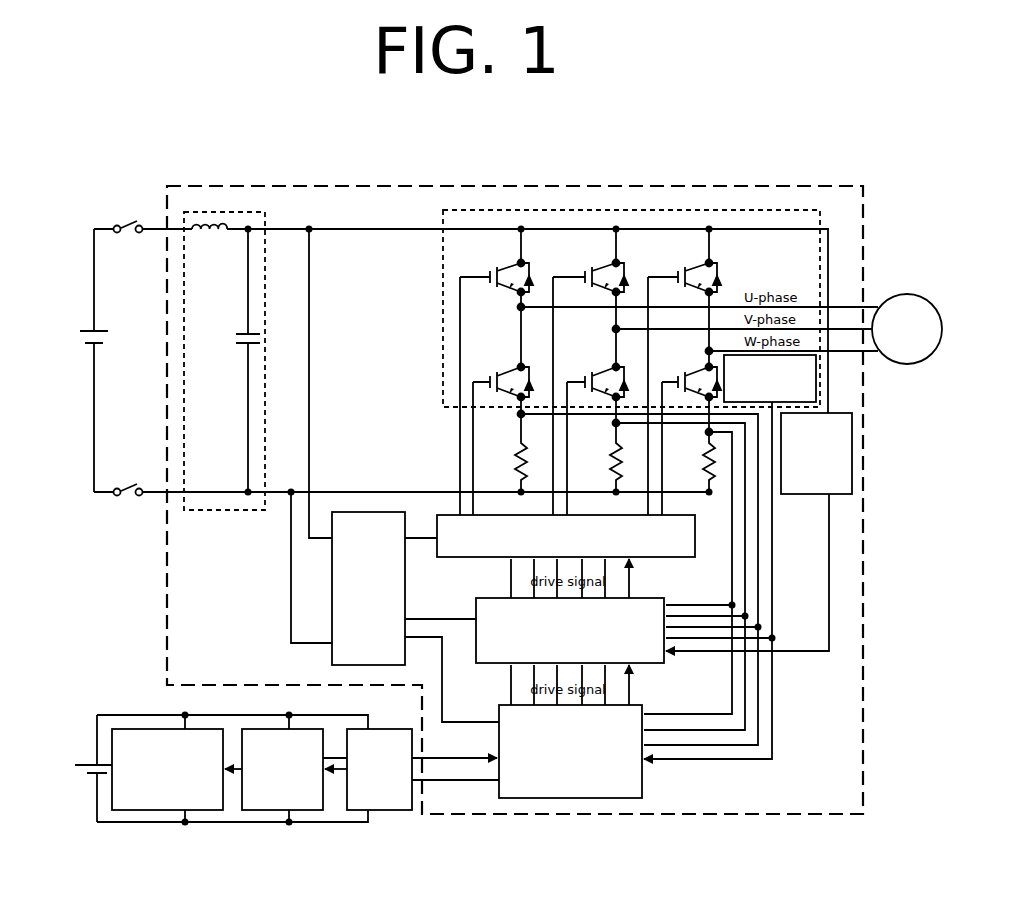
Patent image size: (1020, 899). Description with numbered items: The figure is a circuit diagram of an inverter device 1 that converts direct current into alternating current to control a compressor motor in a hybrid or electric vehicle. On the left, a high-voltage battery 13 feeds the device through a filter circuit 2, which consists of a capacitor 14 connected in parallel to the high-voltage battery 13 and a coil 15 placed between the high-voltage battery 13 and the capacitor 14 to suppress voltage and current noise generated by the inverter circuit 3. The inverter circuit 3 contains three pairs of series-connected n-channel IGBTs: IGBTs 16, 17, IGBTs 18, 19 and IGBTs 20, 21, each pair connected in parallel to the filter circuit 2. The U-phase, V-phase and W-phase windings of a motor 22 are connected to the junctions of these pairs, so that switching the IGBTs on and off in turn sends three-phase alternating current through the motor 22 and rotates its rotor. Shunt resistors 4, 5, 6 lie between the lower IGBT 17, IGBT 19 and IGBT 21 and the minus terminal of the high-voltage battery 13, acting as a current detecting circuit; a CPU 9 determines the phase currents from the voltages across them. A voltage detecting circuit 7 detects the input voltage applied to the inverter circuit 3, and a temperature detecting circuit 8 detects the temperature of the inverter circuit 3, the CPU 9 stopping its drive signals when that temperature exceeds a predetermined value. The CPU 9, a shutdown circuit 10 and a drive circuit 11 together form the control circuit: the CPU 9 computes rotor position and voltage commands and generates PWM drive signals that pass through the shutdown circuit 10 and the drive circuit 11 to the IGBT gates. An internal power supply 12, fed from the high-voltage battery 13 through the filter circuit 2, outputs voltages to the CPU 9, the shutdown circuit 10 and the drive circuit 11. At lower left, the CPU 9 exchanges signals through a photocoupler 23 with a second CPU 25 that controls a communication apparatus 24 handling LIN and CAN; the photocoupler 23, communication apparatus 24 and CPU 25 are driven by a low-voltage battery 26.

The inverter device 1 is at (470, 185).
The filter circuit 2 is at (240, 212).
The inverter circuit 3 is at (655, 210).
The shunt resistor 4 is at (516, 465).
The shunt resistor 5 is at (610, 465).
The shunt resistor 6 is at (703, 465).
The voltage detecting circuit 7 is at (852, 456).
The temperature detecting circuit 8 is at (816, 382).
The CPU 9 is at (642, 793).
The shutdown circuit 10 is at (490, 665).
The drive circuit 11 is at (466, 560).
The internal power supply 12 is at (332, 595).
The high-voltage battery 13 is at (80, 327).
The capacitor 14 is at (246, 333).
The coil 15 is at (207, 235).
The IGBT 16 is at (509, 268).
The IGBT 17 is at (509, 373).
The IGBT 18 is at (602, 268).
The IGBT 19 is at (602, 373).
The IGBT 20 is at (695, 268).
The IGBT 21 is at (695, 373).
The motor 22 is at (913, 295).
The photocoupler 23 is at (387, 812).
The communication apparatus 24 is at (165, 812).
The CPU 25 is at (268, 812).
The low-voltage battery 26 is at (85, 764).